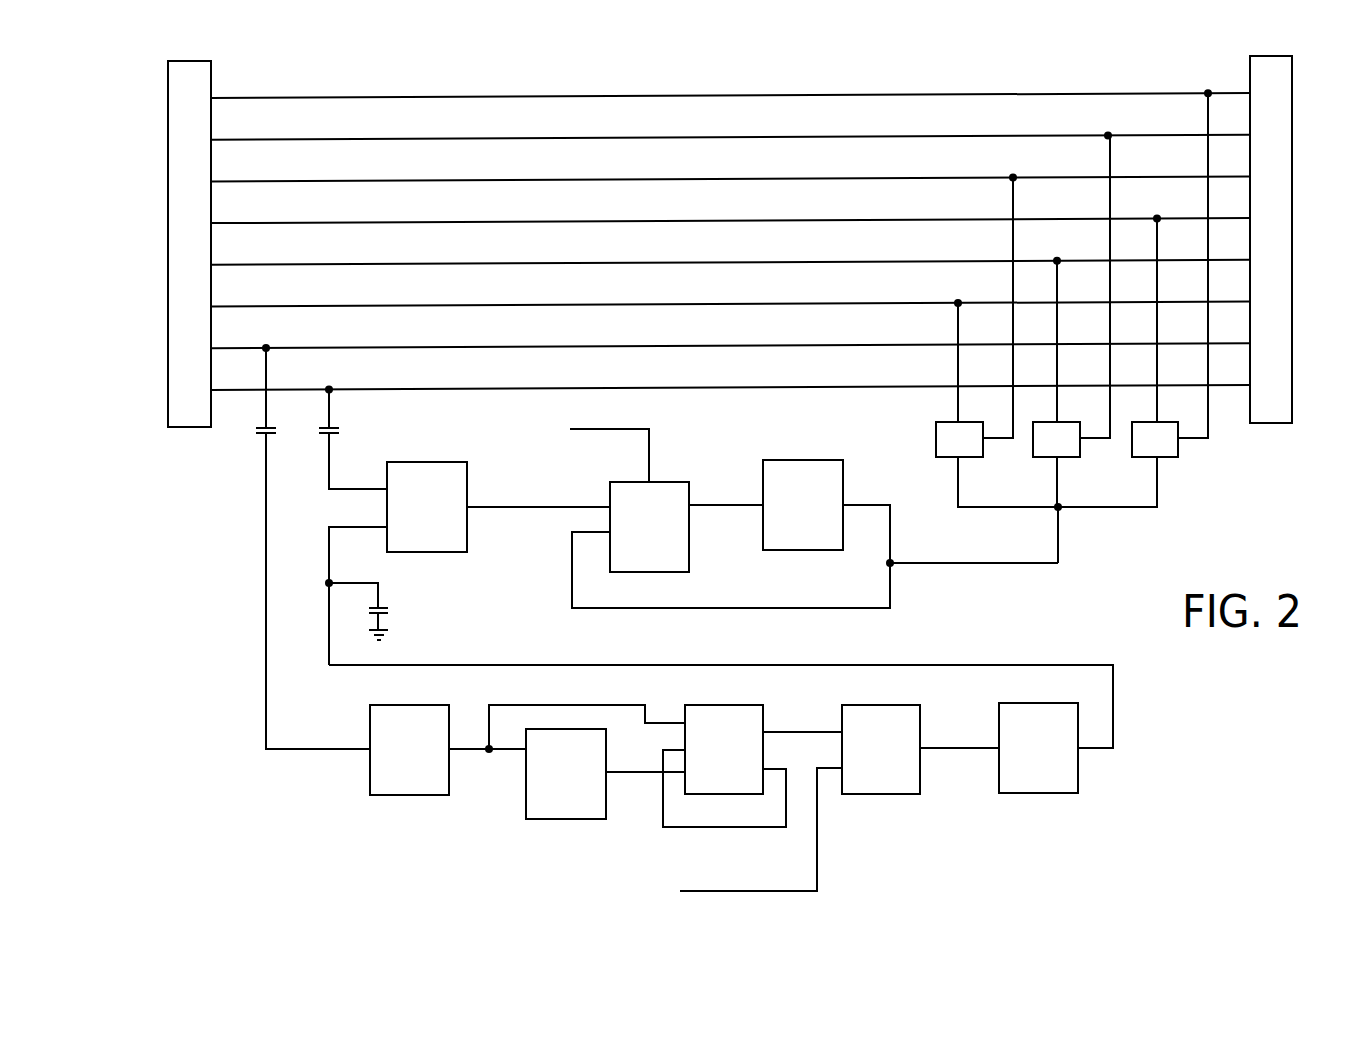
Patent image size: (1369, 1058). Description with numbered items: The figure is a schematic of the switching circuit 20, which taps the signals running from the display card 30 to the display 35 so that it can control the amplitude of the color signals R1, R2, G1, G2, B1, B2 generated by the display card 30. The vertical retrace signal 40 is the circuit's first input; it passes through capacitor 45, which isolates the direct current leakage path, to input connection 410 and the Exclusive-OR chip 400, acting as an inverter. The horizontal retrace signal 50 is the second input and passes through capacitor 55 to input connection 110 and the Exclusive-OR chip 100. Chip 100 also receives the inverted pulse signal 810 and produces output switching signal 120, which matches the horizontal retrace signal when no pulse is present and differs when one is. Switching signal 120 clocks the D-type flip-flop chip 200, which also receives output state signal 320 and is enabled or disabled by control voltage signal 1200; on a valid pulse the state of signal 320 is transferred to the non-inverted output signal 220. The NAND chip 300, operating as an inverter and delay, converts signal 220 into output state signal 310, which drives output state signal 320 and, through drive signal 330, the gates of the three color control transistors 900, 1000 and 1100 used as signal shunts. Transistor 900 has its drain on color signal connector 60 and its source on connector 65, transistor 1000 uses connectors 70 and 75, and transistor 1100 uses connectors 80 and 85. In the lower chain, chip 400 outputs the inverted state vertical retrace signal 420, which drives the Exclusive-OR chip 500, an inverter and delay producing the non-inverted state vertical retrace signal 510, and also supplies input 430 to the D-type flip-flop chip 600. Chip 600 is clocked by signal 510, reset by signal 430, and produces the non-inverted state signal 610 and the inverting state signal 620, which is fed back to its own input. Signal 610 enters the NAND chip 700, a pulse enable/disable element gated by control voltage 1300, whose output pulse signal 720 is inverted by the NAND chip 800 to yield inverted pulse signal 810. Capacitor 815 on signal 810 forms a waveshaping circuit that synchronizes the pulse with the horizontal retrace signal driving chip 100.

The switching circuit 20 is at (230, 574).
The display card 30 is at (168, 374).
The display 35 is at (1293, 318).
The vertical retrace signal 40 is at (264, 408).
The capacitor 45 is at (250, 438).
The horizontal retrace signal 50 is at (333, 424).
The capacitor 55 is at (345, 435).
The color signal connector 60 is at (958, 374).
The connector 65 is at (1013, 374).
The connector 70 is at (1057, 398).
The connector 75 is at (1110, 374).
The connector 80 is at (1157, 398).
The connector 85 is at (1208, 374).
The Exclusive-OR chip 100 is at (432, 552).
The input connection 110 is at (373, 490).
The output switching signal 120 is at (514, 506).
The D-Type Flip-Flop chip 200 is at (689, 545).
The non-inverted output signal 220 is at (723, 504).
The NAND chip 300 is at (792, 460).
The output state signal 310 is at (862, 504).
The output state signal 320 is at (718, 610).
The drive signal 330 is at (956, 565).
The Exclusive-OR chip 400 is at (383, 796).
The input connection 410 is at (262, 700).
The inverted state vertical retrace signal 420 is at (468, 752).
The input 430 is at (568, 705).
The Exclusive-OR chip 500 is at (543, 819).
The non-inverted state vertical retrace signal 510 is at (628, 774).
The D-Type Flip-Flop chip 600 is at (722, 705).
The non-inverted state signal 610 is at (797, 732).
The inverting state signal 620 is at (735, 828).
The NAND chip 700 is at (890, 795).
The output pulse signal 720 is at (940, 749).
The NAND chip 800 is at (1035, 793).
The inverted pulse signal 810 is at (1114, 748).
The capacitor 815 is at (388, 610).
The transistor 900 is at (936, 440).
The transistor 1000 is at (1044, 458).
The transistor 1100 is at (1178, 458).
The control voltage signal 1200 is at (604, 429).
The control voltage 1300 is at (735, 891).
The red signal R1 is at (938, 302).
The red signal return R2 is at (988, 177).
The green signal G1 is at (1038, 260).
The green signal return G2 is at (1082, 134).
The blue signal B1 is at (1138, 218).
The blue signal return B2 is at (1175, 93).